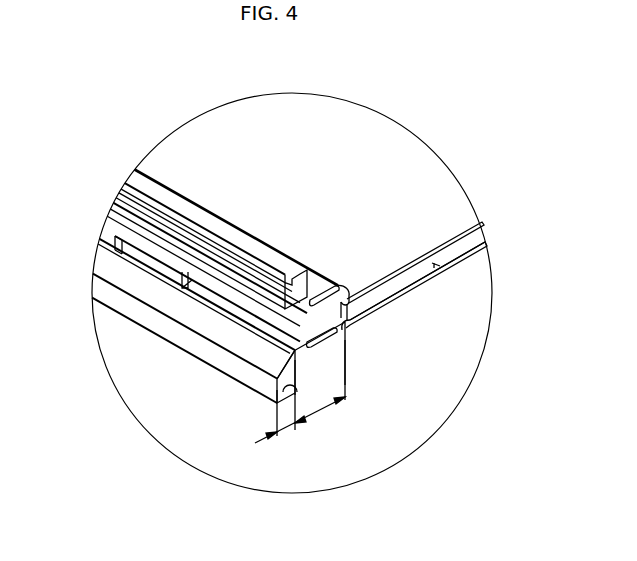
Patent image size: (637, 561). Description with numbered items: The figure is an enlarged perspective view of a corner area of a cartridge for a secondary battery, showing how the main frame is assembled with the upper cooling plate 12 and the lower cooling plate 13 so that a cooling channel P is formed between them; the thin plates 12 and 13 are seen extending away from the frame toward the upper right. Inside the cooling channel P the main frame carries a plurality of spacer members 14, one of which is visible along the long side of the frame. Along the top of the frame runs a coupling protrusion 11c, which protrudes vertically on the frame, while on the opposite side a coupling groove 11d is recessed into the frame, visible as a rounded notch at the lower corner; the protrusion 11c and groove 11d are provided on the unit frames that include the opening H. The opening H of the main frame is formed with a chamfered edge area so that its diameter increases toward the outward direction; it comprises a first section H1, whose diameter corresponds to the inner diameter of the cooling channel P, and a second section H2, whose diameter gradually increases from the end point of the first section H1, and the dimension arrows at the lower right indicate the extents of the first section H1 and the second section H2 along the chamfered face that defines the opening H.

The upper cooling plate 12 is at (360, 140).
The lower cooling plate 13 is at (408, 288).
The spacer member 14 is at (147, 257).
The coupling protrusion 11c is at (240, 256).
The coupling groove 11d is at (287, 392).
The cooling channel P is at (436, 268).
The opening H is at (266, 338).
The first section H1 is at (300, 391).
The second section H2 is at (283, 445).